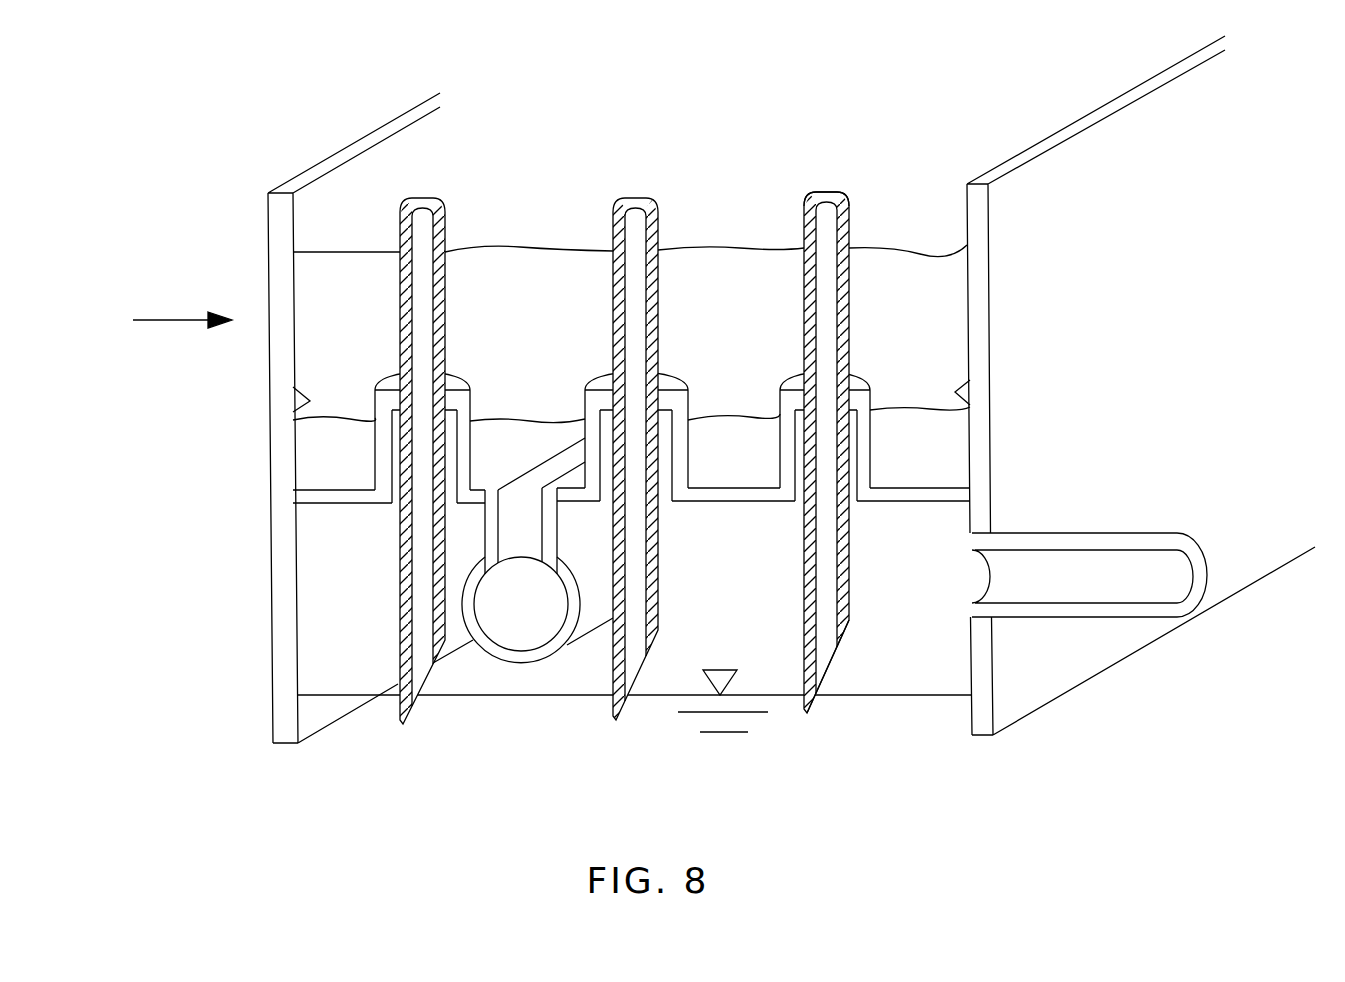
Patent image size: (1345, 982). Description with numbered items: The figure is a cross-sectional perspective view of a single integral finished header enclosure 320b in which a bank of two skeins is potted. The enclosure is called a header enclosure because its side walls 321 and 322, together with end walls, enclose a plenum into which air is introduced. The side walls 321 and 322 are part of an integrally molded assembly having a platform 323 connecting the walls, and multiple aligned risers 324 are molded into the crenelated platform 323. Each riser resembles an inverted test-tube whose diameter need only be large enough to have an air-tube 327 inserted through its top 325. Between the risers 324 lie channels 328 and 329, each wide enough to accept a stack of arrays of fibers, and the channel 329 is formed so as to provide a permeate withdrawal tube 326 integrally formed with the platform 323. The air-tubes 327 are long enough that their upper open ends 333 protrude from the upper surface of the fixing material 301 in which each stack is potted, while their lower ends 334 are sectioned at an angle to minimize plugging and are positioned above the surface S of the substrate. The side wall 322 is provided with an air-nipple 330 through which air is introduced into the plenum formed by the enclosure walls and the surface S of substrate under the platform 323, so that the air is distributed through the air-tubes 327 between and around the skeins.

The fixing material 301 is at (356, 345).
The header enclosure 320b is at (182, 306).
The side wall 321 is at (268, 494).
The side wall 322 is at (1000, 692).
The platform 323 is at (752, 502).
The risers 324 is at (478, 378).
The top 325 is at (660, 372).
The permeate withdrawal tube 326 is at (521, 610).
The air-tube 327 is at (802, 630).
The channel 328 is at (737, 460).
The channel 329 is at (528, 455).
The air-nipple 330 is at (1037, 533).
The upper open ends 333 is at (836, 192).
The lower ends 334 is at (850, 618).
The surface of the substrate S is at (668, 695).